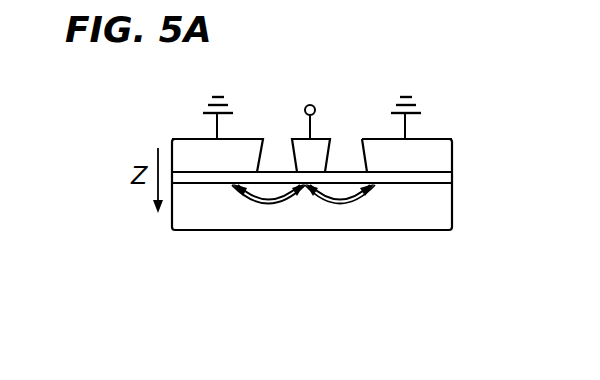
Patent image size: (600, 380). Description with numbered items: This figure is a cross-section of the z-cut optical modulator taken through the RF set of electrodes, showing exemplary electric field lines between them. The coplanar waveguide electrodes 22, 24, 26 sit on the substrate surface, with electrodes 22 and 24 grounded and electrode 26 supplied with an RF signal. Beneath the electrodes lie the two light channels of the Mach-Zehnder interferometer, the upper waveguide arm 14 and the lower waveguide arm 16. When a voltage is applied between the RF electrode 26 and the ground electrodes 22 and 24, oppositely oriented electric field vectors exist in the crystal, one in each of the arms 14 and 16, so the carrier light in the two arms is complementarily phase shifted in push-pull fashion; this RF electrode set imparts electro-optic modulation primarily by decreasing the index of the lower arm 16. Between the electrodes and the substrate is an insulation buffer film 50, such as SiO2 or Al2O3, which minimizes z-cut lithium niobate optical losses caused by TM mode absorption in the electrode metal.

The MZI arm 14 is at (228, 188).
The MZI arm 16 is at (308, 188).
The ground electrode 22 is at (430, 137).
The ground electrode 24 is at (181, 137).
The RF electrode 26 is at (323, 137).
The insulation buffer film 50 is at (452, 181).